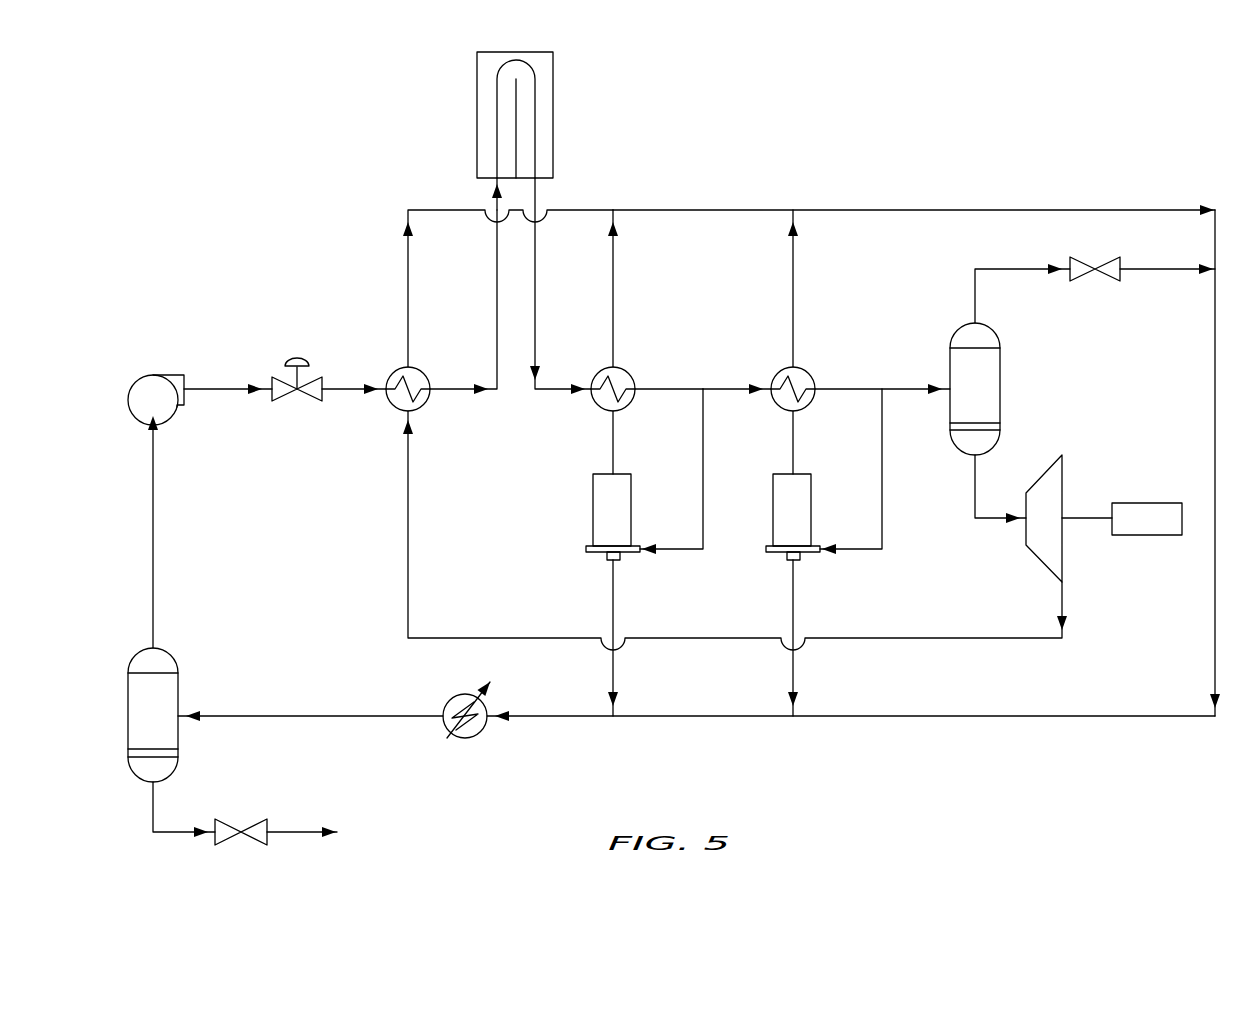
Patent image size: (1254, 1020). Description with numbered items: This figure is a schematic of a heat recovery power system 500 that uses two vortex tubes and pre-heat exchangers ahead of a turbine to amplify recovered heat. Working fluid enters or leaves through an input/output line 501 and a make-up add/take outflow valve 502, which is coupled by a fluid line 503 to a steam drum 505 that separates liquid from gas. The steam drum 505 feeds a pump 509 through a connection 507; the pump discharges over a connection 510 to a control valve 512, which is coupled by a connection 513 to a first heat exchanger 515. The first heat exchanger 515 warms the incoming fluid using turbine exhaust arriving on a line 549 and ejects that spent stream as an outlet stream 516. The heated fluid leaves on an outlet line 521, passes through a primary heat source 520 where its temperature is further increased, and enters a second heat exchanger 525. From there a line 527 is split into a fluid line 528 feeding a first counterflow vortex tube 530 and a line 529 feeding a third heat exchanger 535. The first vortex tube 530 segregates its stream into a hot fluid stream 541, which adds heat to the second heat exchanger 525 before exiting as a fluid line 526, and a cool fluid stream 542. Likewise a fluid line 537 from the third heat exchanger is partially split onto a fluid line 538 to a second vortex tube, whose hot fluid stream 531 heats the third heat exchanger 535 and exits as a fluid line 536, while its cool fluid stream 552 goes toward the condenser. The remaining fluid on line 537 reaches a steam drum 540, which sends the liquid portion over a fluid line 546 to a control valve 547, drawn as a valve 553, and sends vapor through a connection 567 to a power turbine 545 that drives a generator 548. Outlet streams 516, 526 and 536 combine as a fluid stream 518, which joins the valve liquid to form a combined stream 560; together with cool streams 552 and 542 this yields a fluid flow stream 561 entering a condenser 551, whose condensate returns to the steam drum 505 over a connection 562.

The process system 500 is at (948, 757).
The input/output line 501 is at (290, 830).
The make-up add/take outflow valve 502 is at (228, 822).
The fluid line 503 is at (150, 807).
The steam drum 505 is at (180, 685).
The connection 507 is at (156, 530).
The pump 509 is at (152, 375).
The connection 510 is at (217, 389).
The control valve 512 is at (295, 357).
The connection (inlet line) 513 is at (347, 387).
The first heat exchanger 515 is at (400, 410).
The outlet fluid flow stream 516 is at (404, 284).
The fluid stream 518 is at (900, 210).
The primary heat source 520 is at (477, 112).
The outlet line (increased temperature fluid flow) 521 is at (547, 388).
The second heat exchanger 525 is at (628, 370).
The fluid line (outlet stream) 526 is at (615, 290).
The line 527 is at (682, 388).
The fluid line 528 is at (703, 470).
The line 529 is at (717, 388).
The first counterflow vortex tube 530 is at (592, 508).
The hot fluid stream 531 is at (792, 442).
The third heat exchanger / second counterflow vortex tube 535 is at (813, 370).
The fluid line (outlet stream) 536 is at (795, 290).
The fluid line 537 is at (862, 388).
The fluid line 538 is at (882, 470).
The steam drum 540 is at (1002, 388).
The hot fluid stream 541 is at (612, 442).
The cool fluid stream 542 is at (612, 627).
The power turbine 545 is at (1063, 485).
The fluid line 546 is at (1023, 268).
The control valve 547 is at (1108, 282).
The generator 548 is at (1145, 535).
The line (fluid flow inlet stream) 549 is at (932, 640).
The condenser 551 is at (467, 737).
The cool fluid stream 552 is at (792, 627).
The valve 553 is at (1168, 268).
The combined fluid flow stream 560 is at (1213, 628).
The fluid flow stream 561 is at (558, 717).
The fluid flow stream connection 562 is at (310, 717).
The connection 567 is at (975, 487).